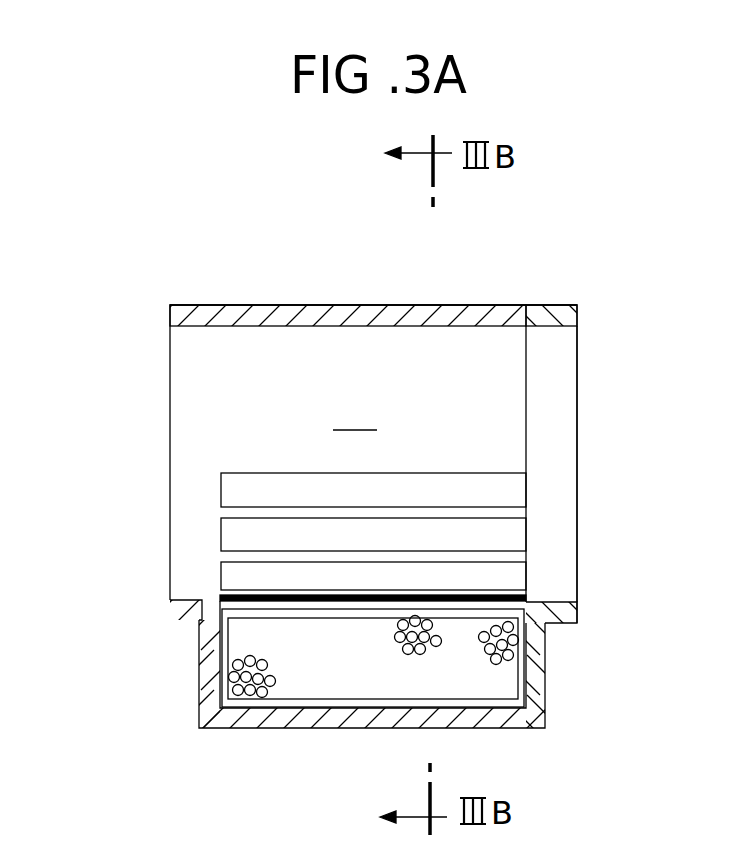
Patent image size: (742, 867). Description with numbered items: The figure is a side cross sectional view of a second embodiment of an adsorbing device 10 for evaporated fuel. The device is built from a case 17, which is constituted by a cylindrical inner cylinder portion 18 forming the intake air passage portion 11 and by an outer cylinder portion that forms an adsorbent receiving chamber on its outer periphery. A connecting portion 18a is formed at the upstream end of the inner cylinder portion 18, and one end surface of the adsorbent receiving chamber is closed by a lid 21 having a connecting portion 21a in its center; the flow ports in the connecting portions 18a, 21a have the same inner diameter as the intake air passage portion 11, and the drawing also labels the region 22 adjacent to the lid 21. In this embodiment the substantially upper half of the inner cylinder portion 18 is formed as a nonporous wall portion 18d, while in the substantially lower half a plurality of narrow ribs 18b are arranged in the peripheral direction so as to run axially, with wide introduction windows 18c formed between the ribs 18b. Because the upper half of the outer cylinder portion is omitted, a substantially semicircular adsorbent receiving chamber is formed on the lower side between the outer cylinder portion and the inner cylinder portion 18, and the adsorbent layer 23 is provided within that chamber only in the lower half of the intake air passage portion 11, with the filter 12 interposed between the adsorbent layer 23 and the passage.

The adsorbing device 10 is at (266, 290).
The intake air passage portion 11 is at (355, 414).
The filter 12 is at (352, 611).
The case 17 is at (372, 305).
The inner cylinder portion 18 is at (210, 305).
The connecting portion 18a is at (170, 612).
The ribs 18b is at (506, 558).
The introduction windows 18c is at (238, 583).
The nonporous wall portion 18d is at (469, 306).
The lid 21 is at (545, 677).
The connecting portion 21a is at (565, 608).
The side wall space 22 is at (562, 462).
The adsorbent layer 23 is at (262, 699).